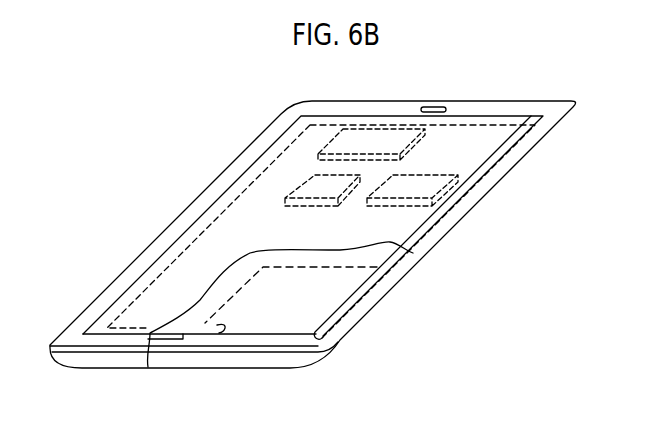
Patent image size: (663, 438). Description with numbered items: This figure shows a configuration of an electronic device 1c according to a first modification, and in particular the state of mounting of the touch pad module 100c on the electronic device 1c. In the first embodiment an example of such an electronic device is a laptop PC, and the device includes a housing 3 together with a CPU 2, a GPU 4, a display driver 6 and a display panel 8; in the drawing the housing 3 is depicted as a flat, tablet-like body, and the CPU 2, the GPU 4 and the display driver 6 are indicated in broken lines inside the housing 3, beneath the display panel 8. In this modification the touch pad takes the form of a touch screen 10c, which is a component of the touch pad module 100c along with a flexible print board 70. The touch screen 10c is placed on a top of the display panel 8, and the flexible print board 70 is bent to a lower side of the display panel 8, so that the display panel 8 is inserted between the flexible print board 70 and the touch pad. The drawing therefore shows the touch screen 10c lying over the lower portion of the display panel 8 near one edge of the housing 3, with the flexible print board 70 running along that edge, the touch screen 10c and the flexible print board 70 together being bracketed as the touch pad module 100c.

The electronic device 1c is at (376, 422).
The housing 3 is at (577, 106).
The display panel 8 is at (517, 152).
The display driver 6 is at (393, 139).
The CPU (Central Processing Unit) 2 is at (305, 180).
The GPU (Graphic Processing Unit) 4 is at (428, 190).
The touch pad module 100c is at (478, 287).
The touch screen 10c is at (347, 287).
The flexible print board 70 is at (362, 302).